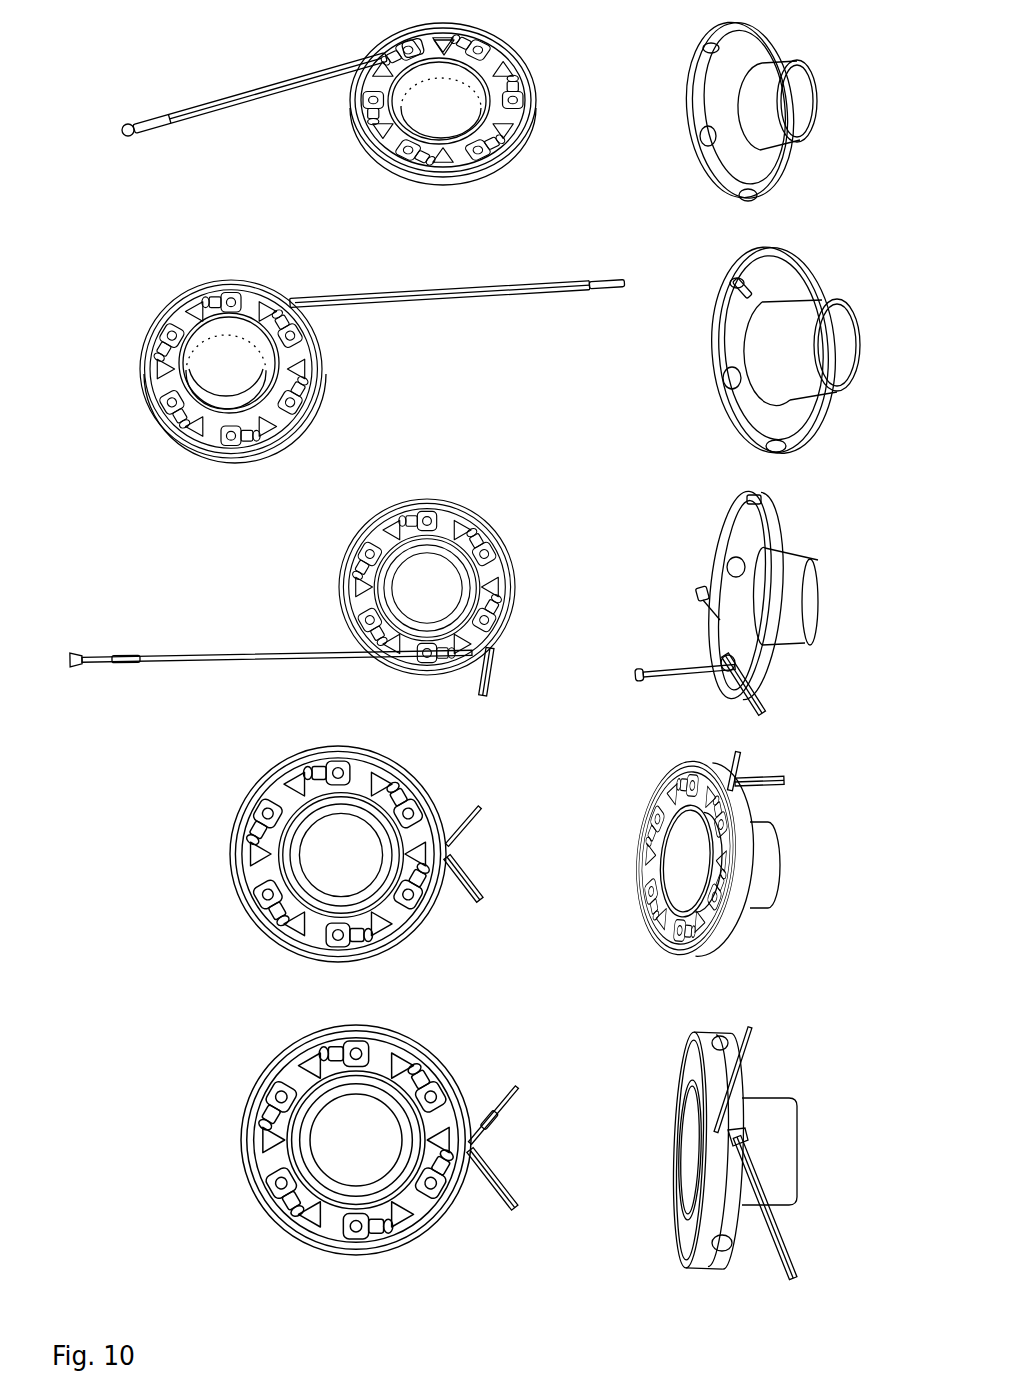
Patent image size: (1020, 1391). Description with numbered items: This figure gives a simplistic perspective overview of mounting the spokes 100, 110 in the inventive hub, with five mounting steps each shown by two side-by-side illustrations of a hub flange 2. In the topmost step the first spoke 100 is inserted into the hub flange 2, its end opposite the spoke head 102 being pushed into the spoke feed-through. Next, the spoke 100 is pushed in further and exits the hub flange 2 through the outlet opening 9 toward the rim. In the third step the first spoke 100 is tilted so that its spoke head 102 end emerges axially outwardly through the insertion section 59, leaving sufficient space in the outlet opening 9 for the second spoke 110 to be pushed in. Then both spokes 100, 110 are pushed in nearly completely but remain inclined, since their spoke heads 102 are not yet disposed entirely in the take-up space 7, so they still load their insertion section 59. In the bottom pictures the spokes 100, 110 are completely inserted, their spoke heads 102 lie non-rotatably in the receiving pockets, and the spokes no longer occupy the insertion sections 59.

The hub flange 2 is at (357, 145).
The take-up space 7 is at (400, 48).
The outlet opening 9 is at (704, 47).
The insertion section 59 is at (437, 40).
The first spoke 100 is at (238, 95).
The spoke head 102 is at (125, 127).
The second spoke 110 is at (196, 655).